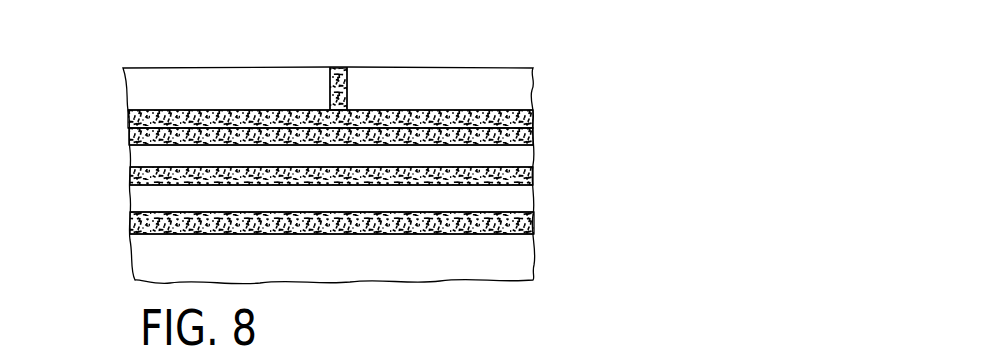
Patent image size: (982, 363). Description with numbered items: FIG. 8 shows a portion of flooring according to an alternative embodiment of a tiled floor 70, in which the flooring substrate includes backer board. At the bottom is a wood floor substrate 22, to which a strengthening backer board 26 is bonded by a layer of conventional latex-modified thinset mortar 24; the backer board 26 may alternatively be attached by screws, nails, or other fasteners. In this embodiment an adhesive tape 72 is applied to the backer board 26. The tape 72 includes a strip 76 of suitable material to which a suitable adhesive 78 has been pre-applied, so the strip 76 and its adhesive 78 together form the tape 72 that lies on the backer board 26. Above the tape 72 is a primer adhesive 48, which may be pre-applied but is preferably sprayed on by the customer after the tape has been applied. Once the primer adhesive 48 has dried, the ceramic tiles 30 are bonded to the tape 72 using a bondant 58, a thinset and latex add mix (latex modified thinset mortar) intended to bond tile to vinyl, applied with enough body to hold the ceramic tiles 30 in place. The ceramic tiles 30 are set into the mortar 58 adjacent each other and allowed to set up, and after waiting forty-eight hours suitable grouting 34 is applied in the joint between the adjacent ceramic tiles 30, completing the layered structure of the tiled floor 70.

The tiled floor 70 is at (552, 63).
The ceramic tiles 30 is at (247, 103).
The grouting 34 is at (338, 68).
The bondant 58 is at (535, 112).
The primer adhesive 48 is at (534, 135).
The adhesive tape 72 is at (535, 158).
The strip 76 is at (132, 158).
The adhesive 78 is at (130, 175).
The backer board 26 is at (335, 212).
The latex-modified thinset mortar 24 is at (535, 223).
The wood floor substrate 22 is at (352, 272).